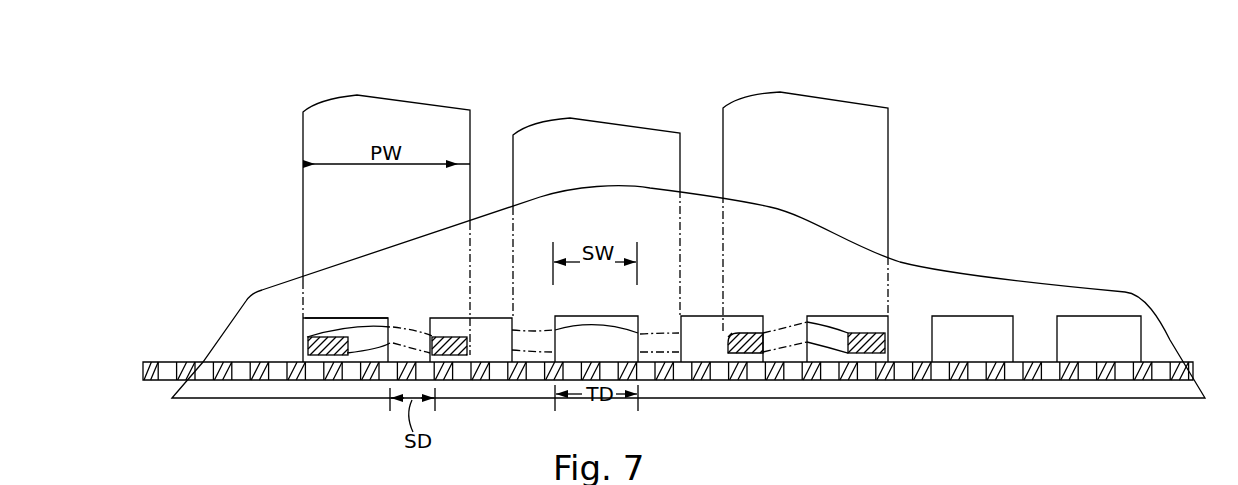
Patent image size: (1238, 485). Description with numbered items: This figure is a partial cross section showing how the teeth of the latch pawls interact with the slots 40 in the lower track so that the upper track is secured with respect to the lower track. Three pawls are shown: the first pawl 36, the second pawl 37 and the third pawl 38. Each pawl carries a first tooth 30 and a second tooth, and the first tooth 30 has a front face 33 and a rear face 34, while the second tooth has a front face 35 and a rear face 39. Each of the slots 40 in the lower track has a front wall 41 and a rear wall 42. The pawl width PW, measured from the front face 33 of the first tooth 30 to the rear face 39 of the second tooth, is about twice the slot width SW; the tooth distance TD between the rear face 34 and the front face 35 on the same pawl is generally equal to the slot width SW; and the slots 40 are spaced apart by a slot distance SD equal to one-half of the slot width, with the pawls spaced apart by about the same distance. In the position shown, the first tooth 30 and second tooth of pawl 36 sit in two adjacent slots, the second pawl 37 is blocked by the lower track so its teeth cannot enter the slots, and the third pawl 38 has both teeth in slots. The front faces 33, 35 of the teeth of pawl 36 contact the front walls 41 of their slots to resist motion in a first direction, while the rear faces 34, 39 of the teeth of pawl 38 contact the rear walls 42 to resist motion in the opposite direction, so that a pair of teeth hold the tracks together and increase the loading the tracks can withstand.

The first tooth 30 is at (327, 357).
The front face 33 is at (304, 345).
The rear face 34 is at (352, 345).
The front face 35 is at (347, 443).
The pawl 36 is at (369, 105).
The second pawl 37 is at (593, 104).
The third pawl 38 is at (813, 103).
The rear face 39 is at (470, 345).
The slots 40 is at (350, 312).
The front wall 41 is at (319, 313).
The rear wall 42 is at (381, 312).